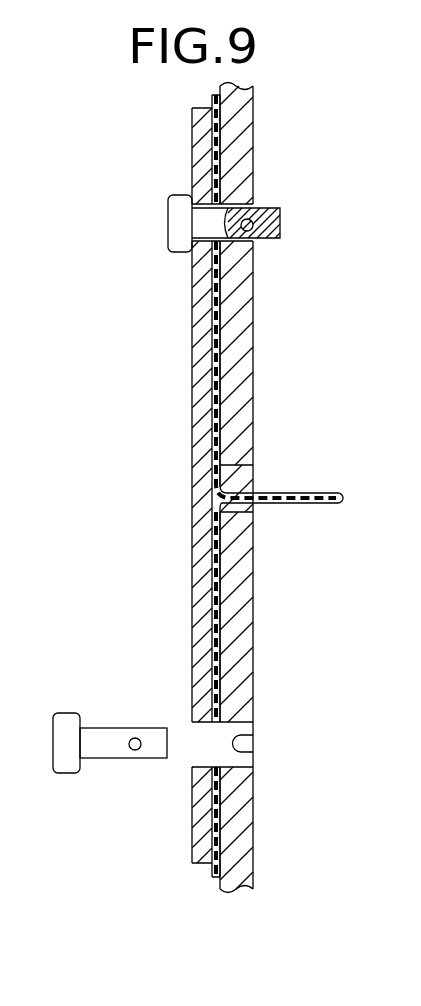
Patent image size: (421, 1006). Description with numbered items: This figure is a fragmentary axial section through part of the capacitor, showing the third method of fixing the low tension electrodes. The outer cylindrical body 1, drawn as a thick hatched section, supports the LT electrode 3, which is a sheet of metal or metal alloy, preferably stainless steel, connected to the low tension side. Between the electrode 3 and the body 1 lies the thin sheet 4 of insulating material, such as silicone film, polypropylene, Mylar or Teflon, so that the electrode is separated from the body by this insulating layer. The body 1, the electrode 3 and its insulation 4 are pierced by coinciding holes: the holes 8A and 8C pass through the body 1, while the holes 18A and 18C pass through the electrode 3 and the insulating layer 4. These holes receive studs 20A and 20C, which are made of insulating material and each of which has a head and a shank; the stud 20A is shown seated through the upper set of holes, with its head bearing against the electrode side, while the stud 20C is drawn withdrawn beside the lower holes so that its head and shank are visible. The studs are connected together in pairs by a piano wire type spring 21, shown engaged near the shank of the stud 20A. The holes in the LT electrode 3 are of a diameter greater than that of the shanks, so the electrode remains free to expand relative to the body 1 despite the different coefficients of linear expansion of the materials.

The outer cylindrical body 1 is at (240, 433).
The LT electrode 3 is at (202, 333).
The sheet of insulating material 4 is at (210, 387).
The hole in the body 8A is at (232, 202).
The hole in the body 8C is at (237, 730).
The hole in the electrode and insulating layer 18A is at (193, 196).
The hole in the electrode and insulating layer 18C is at (202, 747).
The stud 20A is at (172, 210).
The stud 20C is at (96, 730).
The piano wire type spring 21 is at (258, 238).